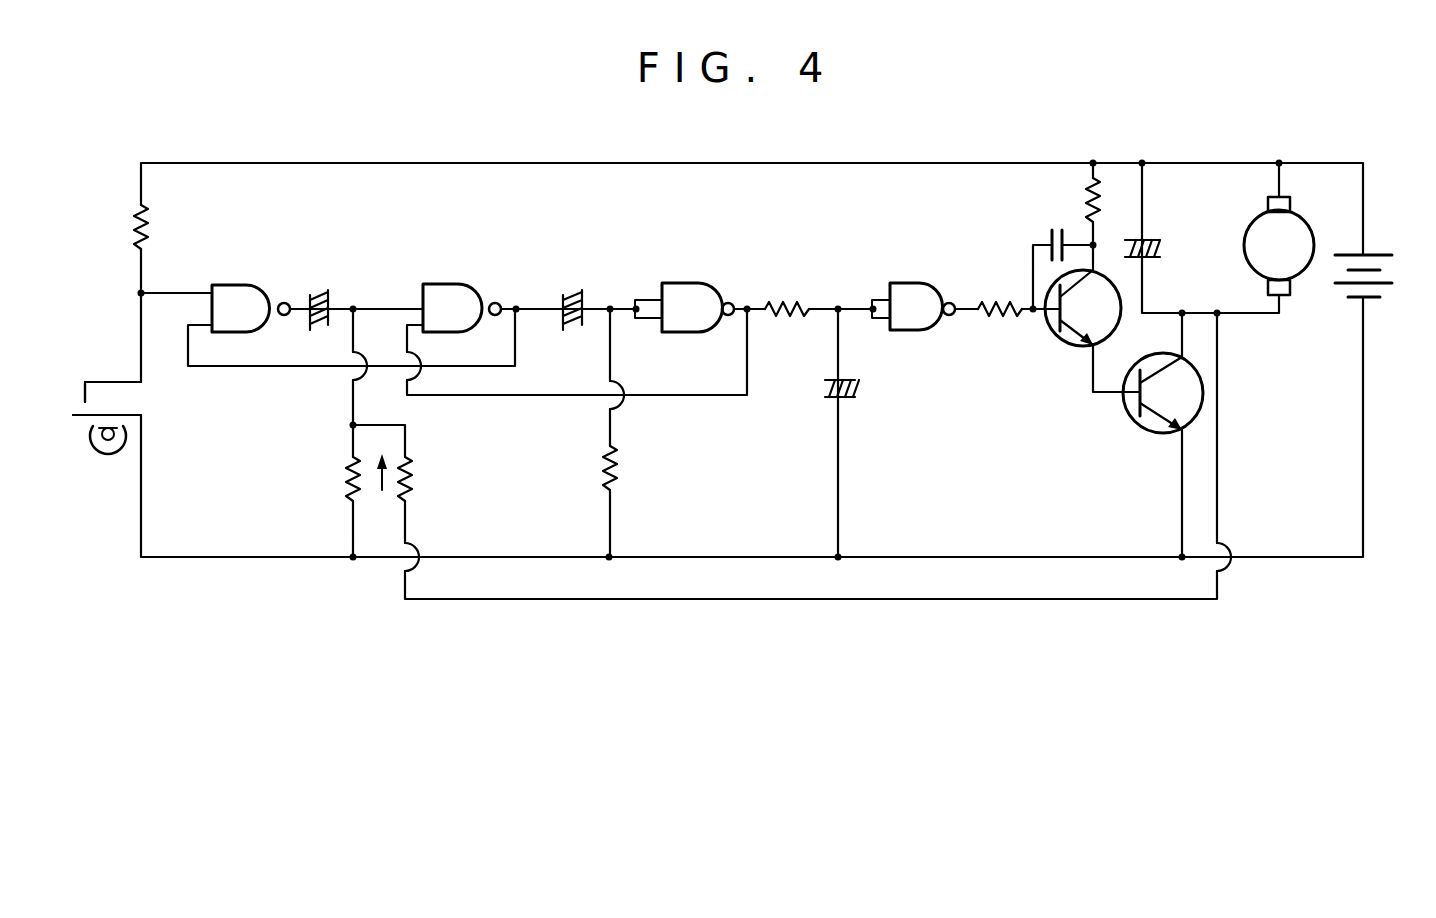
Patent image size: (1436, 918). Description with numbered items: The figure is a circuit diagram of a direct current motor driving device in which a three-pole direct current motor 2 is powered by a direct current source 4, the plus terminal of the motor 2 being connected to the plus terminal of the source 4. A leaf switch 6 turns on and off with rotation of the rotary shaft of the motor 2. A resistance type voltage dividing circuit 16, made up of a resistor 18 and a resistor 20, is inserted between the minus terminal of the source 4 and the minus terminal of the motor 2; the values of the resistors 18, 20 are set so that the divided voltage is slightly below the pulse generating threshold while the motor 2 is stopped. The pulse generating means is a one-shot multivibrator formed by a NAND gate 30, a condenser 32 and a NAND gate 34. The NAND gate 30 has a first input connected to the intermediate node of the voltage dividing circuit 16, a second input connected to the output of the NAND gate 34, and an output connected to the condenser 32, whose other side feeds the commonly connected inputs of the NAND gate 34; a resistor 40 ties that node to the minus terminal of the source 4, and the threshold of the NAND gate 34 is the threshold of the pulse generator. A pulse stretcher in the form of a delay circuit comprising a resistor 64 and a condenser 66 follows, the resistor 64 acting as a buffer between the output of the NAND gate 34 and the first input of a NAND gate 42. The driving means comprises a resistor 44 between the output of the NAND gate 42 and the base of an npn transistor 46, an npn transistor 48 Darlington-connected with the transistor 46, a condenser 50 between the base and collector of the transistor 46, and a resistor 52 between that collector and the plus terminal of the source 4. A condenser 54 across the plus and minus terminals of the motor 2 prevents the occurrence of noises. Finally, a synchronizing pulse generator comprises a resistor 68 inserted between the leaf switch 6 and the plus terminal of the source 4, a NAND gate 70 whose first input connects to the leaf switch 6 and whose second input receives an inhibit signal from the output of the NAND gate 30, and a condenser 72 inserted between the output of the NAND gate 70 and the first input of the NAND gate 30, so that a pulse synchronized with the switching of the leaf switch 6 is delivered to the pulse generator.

The direct current motor 2 is at (1308, 225).
The direct current source 4 is at (1387, 253).
The leaf switch 6 is at (105, 372).
The resistance type voltage dividing circuit 16 is at (387, 494).
The resistor 18 is at (348, 490).
The resistor 20 is at (412, 485).
The NAND gate 30 is at (466, 287).
The condenser 32 is at (583, 290).
The NAND gate 34 is at (715, 286).
The resistor 40 is at (615, 487).
The NAND gate 42 is at (930, 292).
The resistor 44 is at (1005, 316).
The npn transistor 46 is at (1072, 345).
The npn transistor 48 is at (1148, 433).
The condenser 50 is at (1050, 235).
The resistor 52 is at (1090, 206).
The condenser 54 is at (1155, 240).
The resistor 64 is at (802, 303).
The condenser 66 is at (858, 396).
The resistor 68 is at (148, 222).
The NAND gate 70 is at (262, 287).
The condenser 72 is at (327, 295).